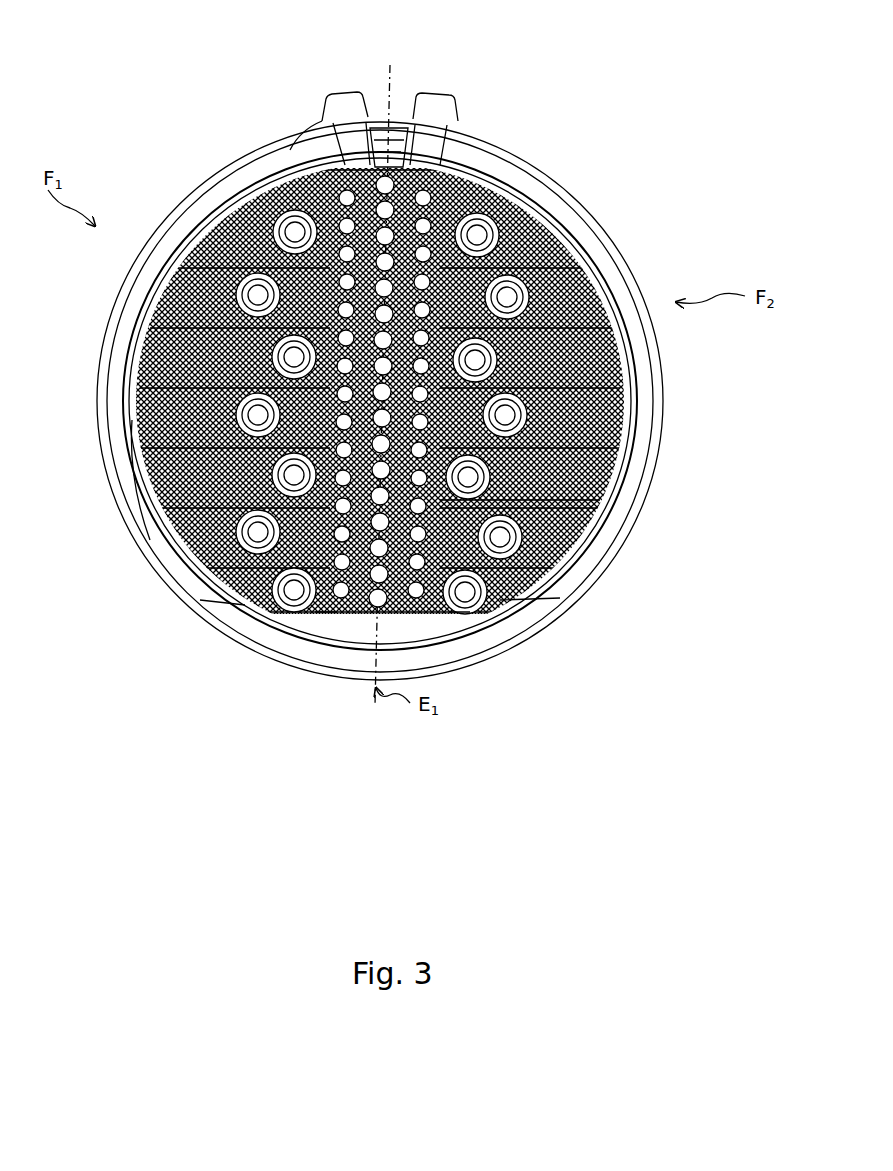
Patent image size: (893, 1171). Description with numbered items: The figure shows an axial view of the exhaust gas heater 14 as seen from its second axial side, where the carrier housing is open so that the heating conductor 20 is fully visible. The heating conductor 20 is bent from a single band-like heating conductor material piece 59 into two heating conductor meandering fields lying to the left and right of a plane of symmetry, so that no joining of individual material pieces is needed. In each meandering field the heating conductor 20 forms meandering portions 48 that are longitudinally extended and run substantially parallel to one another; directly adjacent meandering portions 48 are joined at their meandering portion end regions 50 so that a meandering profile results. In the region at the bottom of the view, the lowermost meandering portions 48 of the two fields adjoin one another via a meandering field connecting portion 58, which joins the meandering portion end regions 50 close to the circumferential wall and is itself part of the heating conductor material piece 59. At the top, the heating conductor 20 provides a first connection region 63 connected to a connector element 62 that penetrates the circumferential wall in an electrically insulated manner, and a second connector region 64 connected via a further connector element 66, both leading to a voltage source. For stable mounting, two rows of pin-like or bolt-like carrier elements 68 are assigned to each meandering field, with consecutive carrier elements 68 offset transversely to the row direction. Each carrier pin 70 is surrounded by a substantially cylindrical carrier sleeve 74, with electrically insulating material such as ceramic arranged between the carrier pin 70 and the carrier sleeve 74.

The exhaust gas heater 14 is at (586, 82).
The heating conductor 20 is at (522, 206).
The meandering portions 48 is at (325, 623).
The meandering portion end regions 50 is at (240, 608).
The meandering field connecting portion 58 is at (353, 640).
The heating conductor material piece 59 is at (130, 452).
The connector element 62 is at (338, 92).
The first connection region 63 is at (324, 138).
The second connector region 64 is at (446, 140).
The connector element 66 is at (443, 92).
The carrier elements 68 is at (545, 282).
The carrier pin 70 is at (505, 537).
The carrier sleeve 74 is at (525, 508).